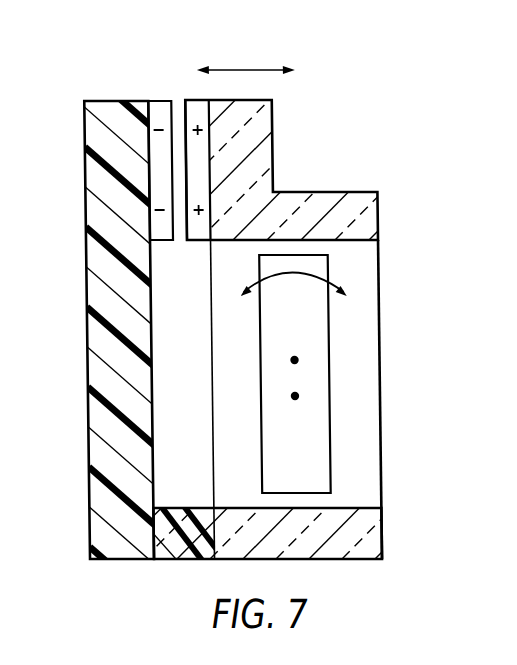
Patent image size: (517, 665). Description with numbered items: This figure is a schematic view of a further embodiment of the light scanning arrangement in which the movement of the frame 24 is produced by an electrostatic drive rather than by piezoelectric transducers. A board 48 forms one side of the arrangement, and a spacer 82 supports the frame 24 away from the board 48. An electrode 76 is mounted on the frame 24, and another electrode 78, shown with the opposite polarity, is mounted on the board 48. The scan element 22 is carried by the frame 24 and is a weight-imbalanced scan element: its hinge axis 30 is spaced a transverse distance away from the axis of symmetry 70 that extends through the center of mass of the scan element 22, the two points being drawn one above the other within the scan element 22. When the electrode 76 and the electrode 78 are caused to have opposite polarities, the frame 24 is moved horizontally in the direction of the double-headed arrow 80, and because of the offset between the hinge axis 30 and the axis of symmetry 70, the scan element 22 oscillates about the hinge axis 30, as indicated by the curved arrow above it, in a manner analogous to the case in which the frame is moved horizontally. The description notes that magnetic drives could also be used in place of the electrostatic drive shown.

The scan element 22 is at (314, 330).
The frame 24 is at (364, 543).
The hinge axis 30 is at (293, 398).
The board 48 is at (81, 277).
The axis of symmetry 70 is at (294, 362).
The electrode 76 is at (196, 107).
The negative electrode 78 is at (156, 107).
The double-headed arrow 80 is at (241, 69).
The spacer 82 is at (165, 530).